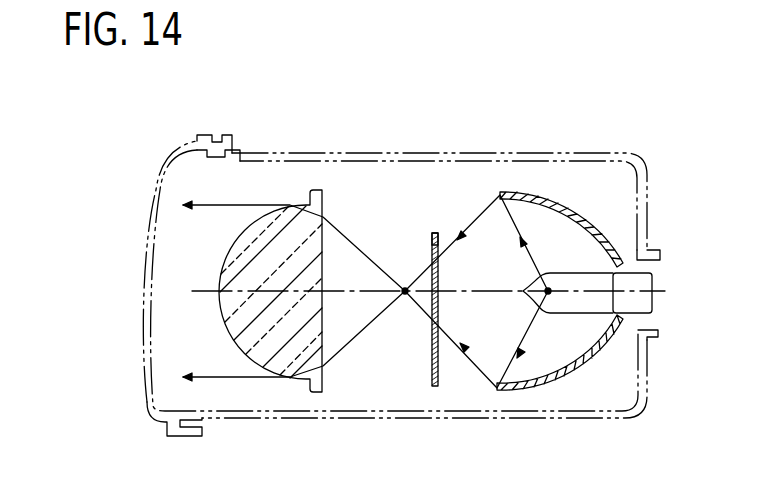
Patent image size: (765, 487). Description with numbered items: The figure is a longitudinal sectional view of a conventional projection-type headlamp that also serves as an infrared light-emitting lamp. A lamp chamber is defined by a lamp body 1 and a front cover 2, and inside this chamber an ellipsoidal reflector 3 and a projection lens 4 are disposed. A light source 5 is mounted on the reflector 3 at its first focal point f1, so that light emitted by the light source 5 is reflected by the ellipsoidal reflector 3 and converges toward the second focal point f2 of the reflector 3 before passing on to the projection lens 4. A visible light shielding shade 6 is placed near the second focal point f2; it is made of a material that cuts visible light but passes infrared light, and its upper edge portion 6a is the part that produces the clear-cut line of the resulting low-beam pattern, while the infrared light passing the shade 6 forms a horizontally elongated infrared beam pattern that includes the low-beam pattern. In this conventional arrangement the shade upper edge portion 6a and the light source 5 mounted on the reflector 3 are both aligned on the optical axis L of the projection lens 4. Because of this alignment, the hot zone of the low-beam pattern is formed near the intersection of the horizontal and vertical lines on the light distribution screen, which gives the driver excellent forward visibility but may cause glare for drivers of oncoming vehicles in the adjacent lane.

The lamp body 1 is at (452, 152).
The front cover 2 is at (147, 327).
The ellipsoidal reflector 3 is at (558, 202).
The projection lens 4 is at (247, 253).
The light source 5 is at (570, 313).
The visible light shielding shade 6 is at (432, 358).
The upper edge portion of the light shielding shade 6a is at (434, 234).
The optical axis L is at (336, 290).
The first focal point f1 is at (550, 290).
The second focal point f2 is at (405, 289).